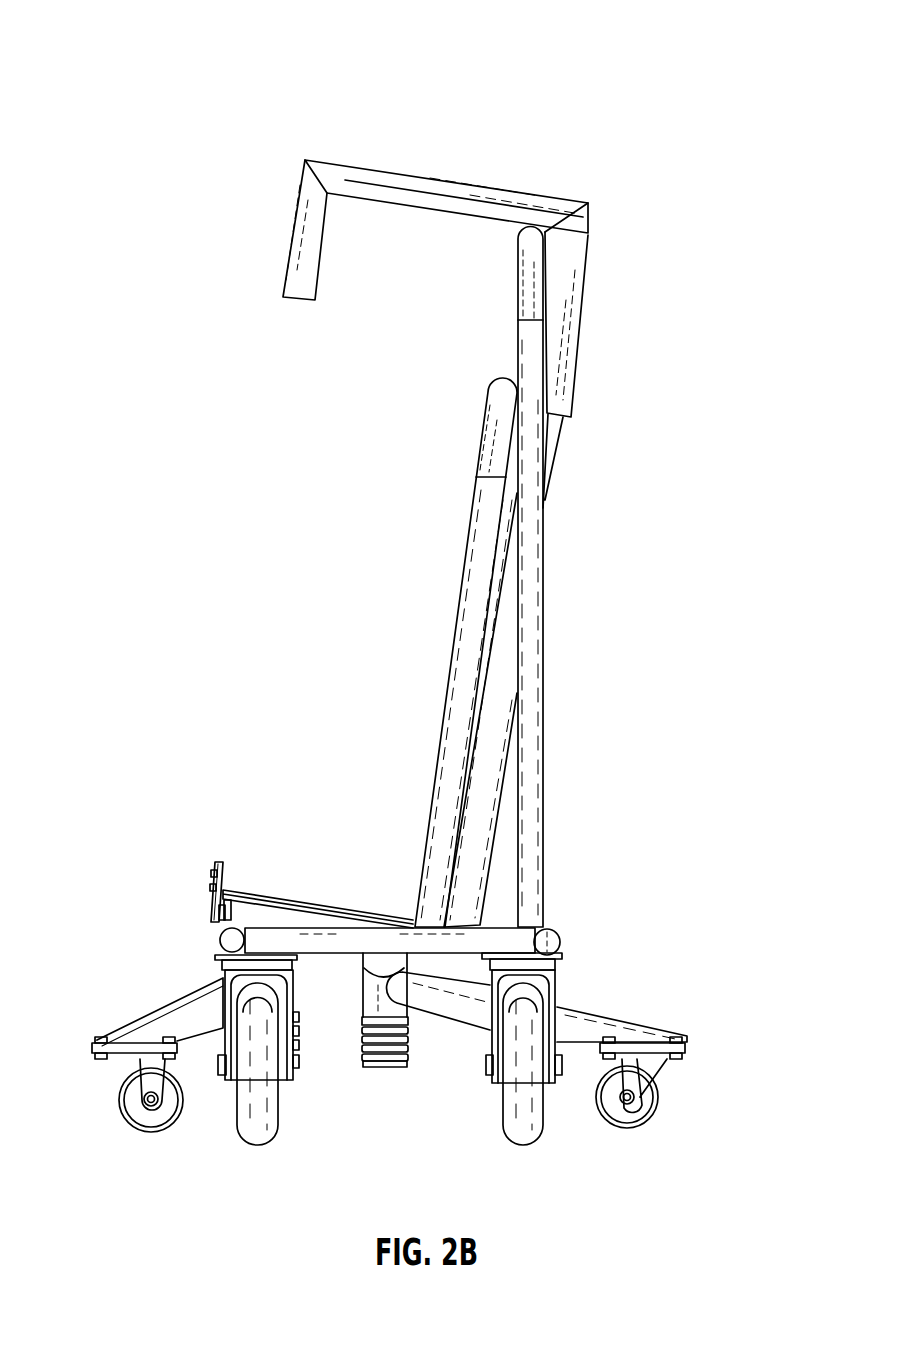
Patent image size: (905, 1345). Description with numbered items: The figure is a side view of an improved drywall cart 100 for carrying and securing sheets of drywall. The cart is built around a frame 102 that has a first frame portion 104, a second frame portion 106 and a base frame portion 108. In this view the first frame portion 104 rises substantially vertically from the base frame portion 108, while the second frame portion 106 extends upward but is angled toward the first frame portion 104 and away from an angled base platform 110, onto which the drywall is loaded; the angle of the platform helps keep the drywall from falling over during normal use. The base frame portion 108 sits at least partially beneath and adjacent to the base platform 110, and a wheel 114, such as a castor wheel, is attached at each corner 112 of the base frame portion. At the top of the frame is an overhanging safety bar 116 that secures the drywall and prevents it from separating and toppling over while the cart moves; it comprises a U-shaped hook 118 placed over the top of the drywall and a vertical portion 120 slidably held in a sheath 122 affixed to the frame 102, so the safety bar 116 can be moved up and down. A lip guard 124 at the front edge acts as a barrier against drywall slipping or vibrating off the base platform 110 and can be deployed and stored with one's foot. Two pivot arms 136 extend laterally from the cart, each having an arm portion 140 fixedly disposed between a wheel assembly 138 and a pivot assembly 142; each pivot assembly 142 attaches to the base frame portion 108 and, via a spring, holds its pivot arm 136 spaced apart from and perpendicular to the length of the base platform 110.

The drywall cart 100 is at (89, 56).
The frame 102 is at (456, 351).
The first frame portion 104 is at (514, 278).
The second frame portion 106 is at (462, 478).
The base frame portion 108 is at (520, 940).
The angled base platform 110 is at (274, 892).
The corner 112 is at (486, 1043).
The wheel 114 is at (262, 1147).
The overhanging safety bar 116 is at (625, 216).
The U-shaped hook 118 is at (466, 187).
The vertical portion 120 is at (556, 428).
The sheath 122 is at (574, 307).
The lip guard 124 is at (226, 860).
The pivot arm 136 is at (160, 1006).
The wheel assembly 138 is at (133, 1130).
The arm portion 140 is at (187, 1036).
The pivot assembly 142 is at (382, 1073).